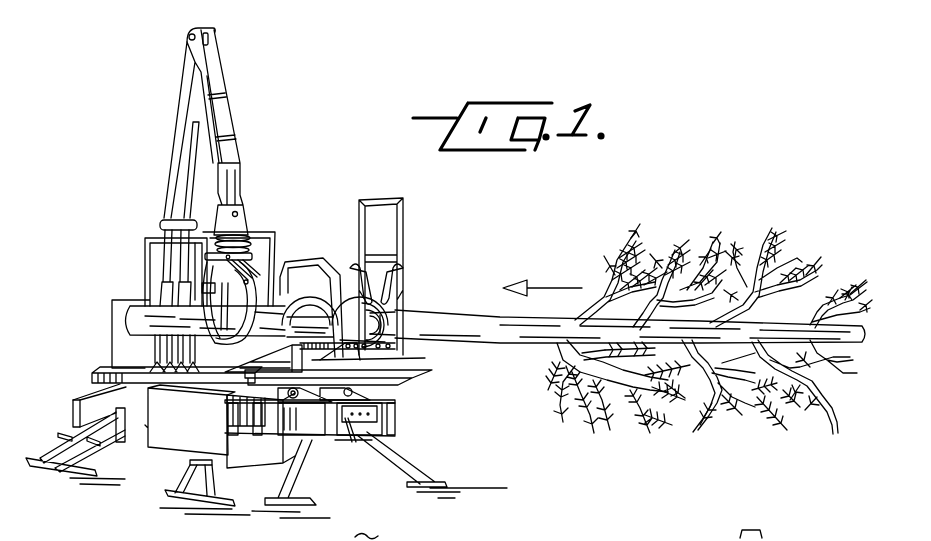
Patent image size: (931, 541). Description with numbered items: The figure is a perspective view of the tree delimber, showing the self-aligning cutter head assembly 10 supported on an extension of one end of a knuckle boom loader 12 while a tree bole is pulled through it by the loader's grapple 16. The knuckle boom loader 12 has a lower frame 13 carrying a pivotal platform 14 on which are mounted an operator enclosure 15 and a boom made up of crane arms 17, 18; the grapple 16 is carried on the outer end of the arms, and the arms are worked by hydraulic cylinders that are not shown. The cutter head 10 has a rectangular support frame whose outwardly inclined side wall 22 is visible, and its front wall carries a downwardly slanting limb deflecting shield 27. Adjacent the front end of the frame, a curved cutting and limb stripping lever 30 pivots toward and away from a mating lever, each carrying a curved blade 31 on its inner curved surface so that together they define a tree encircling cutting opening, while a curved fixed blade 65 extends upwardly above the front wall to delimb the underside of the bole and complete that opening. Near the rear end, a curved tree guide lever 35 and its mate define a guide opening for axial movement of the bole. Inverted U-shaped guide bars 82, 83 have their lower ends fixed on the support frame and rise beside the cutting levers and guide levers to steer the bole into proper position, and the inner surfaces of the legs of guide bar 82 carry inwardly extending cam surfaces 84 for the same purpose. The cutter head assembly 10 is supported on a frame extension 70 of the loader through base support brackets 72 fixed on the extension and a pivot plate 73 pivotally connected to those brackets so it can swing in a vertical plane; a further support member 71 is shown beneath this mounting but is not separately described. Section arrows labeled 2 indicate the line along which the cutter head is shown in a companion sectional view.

The section line 2- 2 is at (228, 407).
The self-aligning cutter head assembly 10 is at (428, 385).
The knuckle boom loader 12 is at (140, 367).
The lower frame 13 is at (74, 413).
The pivotal platform 14 is at (110, 373).
The operator enclosure 15 is at (146, 252).
The grapple 16 is at (182, 313).
The crane arm 17 is at (180, 132).
The crane arm 18 is at (230, 126).
The side wall 22 is at (238, 350).
The limb deflecting shield 27 is at (430, 364).
The curved cutting and limb stripping lever 30 is at (388, 305).
The curved blade 31 is at (392, 319).
The curved tree guide lever 35 is at (297, 272).
The curved fixed blade 65 is at (410, 335).
The frame extension 70 is at (195, 463).
The support leg 71 is at (352, 433).
The base support brackets 72 is at (262, 428).
The pivot plate 73 is at (394, 390).
The inverted U-shaped guide bar 82 is at (405, 224).
The inverted U-shaped guide bar 83 is at (287, 258).
The cam surfaces 84 is at (400, 307).